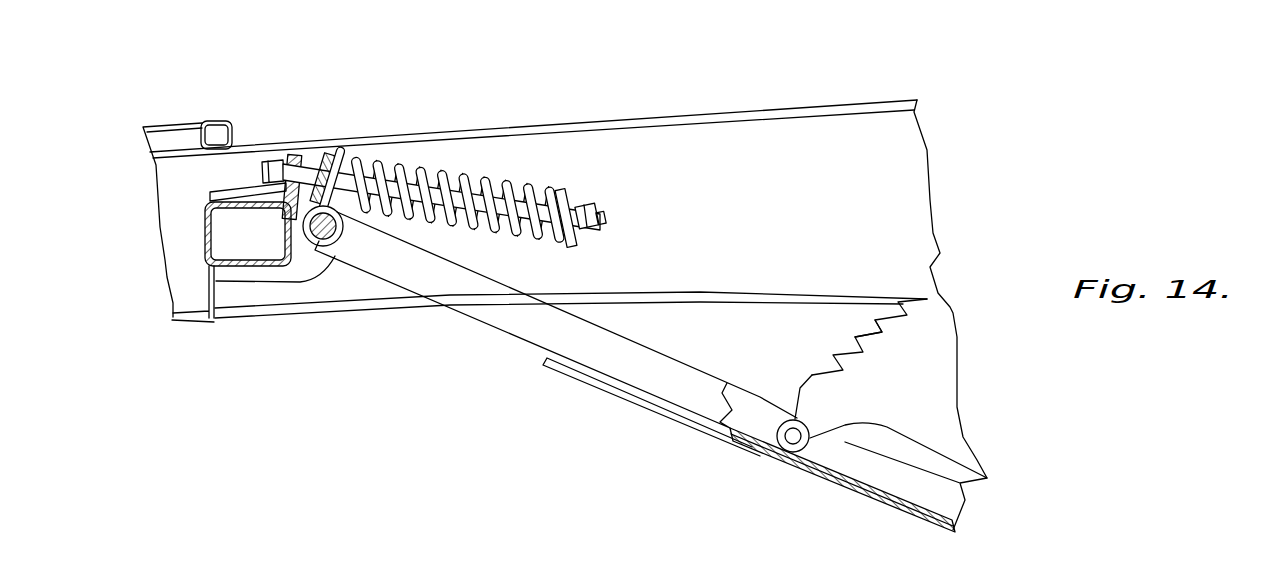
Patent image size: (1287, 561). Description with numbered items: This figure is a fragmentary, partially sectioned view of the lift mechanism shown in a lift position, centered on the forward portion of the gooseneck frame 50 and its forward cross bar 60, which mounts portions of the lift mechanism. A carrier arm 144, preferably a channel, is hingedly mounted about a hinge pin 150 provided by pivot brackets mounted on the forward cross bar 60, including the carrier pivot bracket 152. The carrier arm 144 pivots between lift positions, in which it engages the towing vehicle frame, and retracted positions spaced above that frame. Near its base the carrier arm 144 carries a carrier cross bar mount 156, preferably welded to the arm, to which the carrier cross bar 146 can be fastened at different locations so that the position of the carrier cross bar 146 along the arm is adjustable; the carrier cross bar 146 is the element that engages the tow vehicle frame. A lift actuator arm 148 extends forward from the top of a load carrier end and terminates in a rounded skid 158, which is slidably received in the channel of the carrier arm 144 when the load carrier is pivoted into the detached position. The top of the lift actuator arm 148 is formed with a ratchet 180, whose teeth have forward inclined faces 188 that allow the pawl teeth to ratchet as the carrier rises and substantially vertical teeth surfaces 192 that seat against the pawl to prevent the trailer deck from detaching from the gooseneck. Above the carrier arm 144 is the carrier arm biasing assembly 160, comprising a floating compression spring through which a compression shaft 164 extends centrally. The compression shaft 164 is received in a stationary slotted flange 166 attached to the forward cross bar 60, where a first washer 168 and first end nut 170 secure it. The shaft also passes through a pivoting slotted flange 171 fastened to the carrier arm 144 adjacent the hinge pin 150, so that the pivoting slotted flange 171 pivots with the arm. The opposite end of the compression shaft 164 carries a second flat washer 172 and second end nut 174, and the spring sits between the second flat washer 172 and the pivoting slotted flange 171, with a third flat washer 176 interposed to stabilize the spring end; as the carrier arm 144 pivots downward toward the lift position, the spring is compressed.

The gooseneck frame 50 is at (202, 122).
The forward cross bar 60 is at (232, 258).
The carrier arm 144 is at (504, 318).
The carrier cross bar 146 is at (806, 483).
The lift actuator arm 148 is at (822, 400).
The hinge pin 150 is at (333, 242).
The carrier pivot bracket 152 is at (297, 272).
The carrier cross bar mount 156 is at (636, 399).
The rounded skid 158 is at (801, 443).
The carrier arm biasing assembly 160 is at (455, 155).
The compression shaft 164 is at (534, 216).
The stationary slotted flange 166 is at (290, 153).
The first washer 168 is at (284, 188).
The first end nut 170 is at (275, 160).
The pivoting slotted flange 171 is at (340, 148).
The second flat washer 172 is at (578, 194).
The second end nut 174 is at (590, 215).
The third flat washer 176 is at (338, 152).
The ratchet 180 is at (874, 303).
The forward inclined face 188 is at (882, 330).
The vertical ratchet teeth surface 192 is at (852, 338).